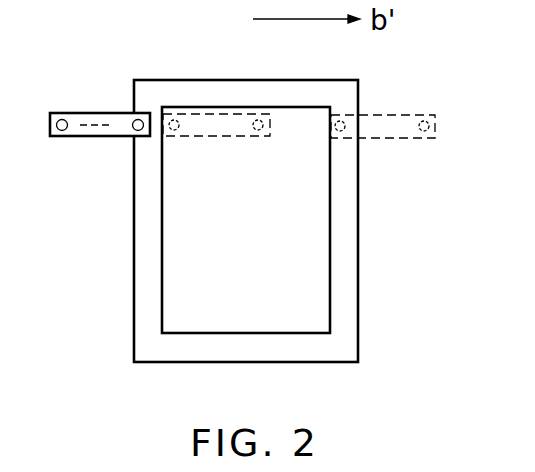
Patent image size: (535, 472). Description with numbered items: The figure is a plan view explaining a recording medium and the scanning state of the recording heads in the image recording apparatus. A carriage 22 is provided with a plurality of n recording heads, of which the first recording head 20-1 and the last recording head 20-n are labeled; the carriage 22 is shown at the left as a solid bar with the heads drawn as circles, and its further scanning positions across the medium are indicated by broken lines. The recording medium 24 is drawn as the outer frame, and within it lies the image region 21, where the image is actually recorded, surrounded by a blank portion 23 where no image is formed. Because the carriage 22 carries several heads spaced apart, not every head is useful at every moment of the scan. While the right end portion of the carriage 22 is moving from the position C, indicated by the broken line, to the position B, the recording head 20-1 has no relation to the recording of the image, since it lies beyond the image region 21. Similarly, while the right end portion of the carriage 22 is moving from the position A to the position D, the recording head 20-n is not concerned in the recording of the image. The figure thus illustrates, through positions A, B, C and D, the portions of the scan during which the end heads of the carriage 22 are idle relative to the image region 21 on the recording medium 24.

The recording head 20-1 is at (139, 119).
The recording head 20-n is at (62, 119).
The image region 21 is at (236, 152).
The carriage 22 is at (72, 134).
The blank portion 23 is at (345, 248).
The recording medium 24 is at (358, 362).
The position A is at (156, 145).
The position B is at (434, 148).
The position C is at (323, 148).
The position D is at (264, 147).